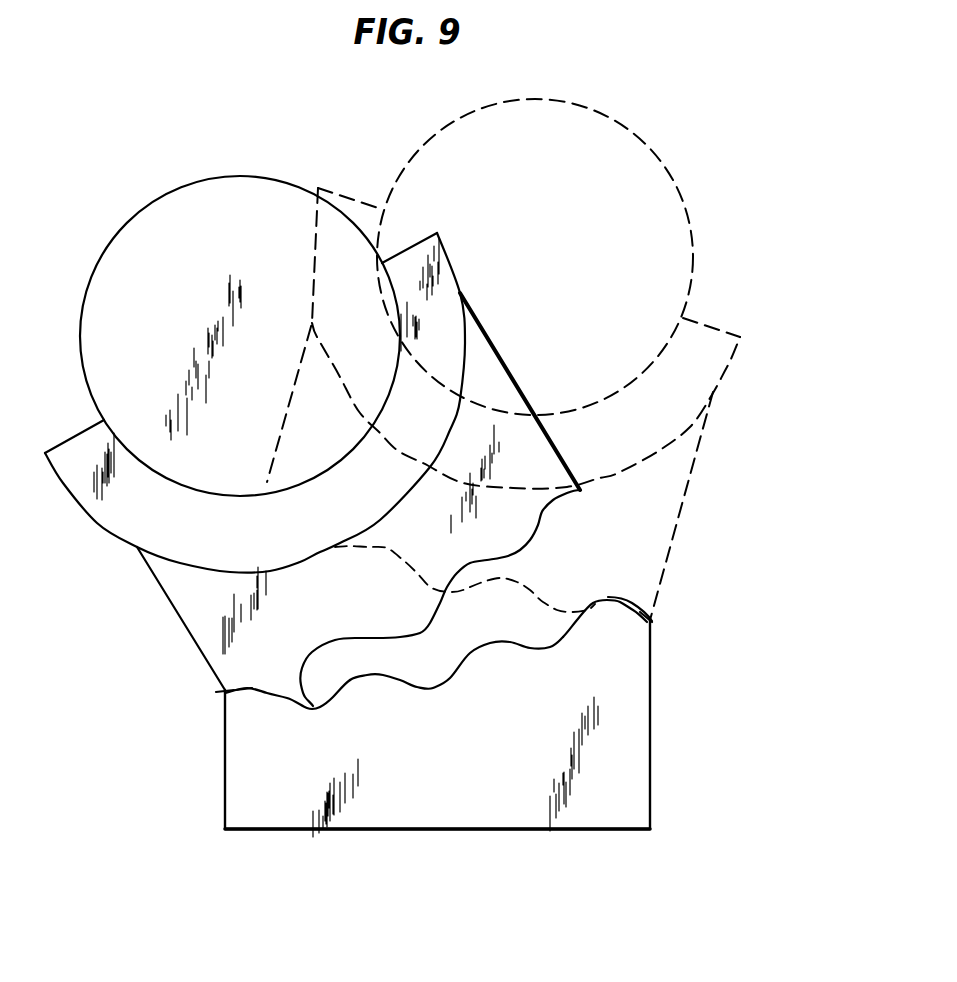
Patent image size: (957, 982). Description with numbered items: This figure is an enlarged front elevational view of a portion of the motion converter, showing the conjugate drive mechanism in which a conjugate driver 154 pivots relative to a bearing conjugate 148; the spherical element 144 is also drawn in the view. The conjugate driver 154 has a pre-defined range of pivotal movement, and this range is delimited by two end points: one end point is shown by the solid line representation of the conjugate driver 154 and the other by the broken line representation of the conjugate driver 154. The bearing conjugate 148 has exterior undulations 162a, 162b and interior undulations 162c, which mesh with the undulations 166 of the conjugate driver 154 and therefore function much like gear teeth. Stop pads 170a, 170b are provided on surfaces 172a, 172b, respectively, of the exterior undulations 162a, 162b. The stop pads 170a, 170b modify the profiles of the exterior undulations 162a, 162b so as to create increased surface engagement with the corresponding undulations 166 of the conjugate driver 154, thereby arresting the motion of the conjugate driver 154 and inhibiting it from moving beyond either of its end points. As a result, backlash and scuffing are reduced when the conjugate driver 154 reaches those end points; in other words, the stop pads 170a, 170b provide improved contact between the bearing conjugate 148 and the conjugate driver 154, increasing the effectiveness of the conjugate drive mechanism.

The spherical food product 144 is at (130, 217).
The conjugate driver 154 is at (163, 578).
The undulations of the conjugate driver 166 is at (510, 553).
The bearing conjugate 148 is at (442, 793).
The exterior undulation 162a is at (273, 697).
The exterior undulation 162b is at (620, 603).
The interior undulations 162c is at (380, 677).
The stop pad 170a is at (225, 697).
The stop pad 170b is at (652, 620).
The surface of exterior undulation 172a is at (243, 690).
The surface of exterior undulation 172b is at (650, 618).